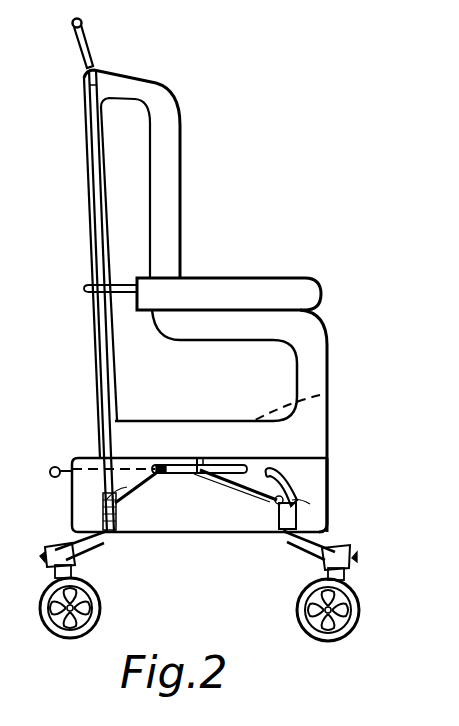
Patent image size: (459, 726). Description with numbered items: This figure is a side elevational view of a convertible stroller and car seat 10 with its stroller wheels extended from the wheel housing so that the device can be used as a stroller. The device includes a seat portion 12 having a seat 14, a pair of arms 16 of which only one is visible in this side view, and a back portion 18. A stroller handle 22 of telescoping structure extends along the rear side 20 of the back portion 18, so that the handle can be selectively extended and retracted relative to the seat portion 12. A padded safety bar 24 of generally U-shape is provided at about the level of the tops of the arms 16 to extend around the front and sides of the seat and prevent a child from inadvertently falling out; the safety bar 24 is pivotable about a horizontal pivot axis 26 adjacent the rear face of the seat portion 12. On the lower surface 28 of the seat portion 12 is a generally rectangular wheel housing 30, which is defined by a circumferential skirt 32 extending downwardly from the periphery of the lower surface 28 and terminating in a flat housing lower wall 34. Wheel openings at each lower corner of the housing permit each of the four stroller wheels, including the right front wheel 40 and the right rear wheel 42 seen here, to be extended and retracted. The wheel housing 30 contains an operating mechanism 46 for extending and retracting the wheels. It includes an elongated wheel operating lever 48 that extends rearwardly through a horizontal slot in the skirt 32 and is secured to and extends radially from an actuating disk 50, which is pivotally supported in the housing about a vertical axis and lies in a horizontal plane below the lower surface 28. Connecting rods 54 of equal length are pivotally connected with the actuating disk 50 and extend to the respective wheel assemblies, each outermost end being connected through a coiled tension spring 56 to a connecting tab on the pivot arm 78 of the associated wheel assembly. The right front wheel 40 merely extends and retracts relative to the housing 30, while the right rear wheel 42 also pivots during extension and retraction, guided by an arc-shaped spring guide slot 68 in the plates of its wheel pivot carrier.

The convertible stroller and car seat 10 is at (275, 144).
The seat portion 12 is at (350, 372).
The seat 14 is at (320, 398).
The arms 16 is at (312, 332).
The back portion 18 is at (128, 115).
The rear side 20 is at (89, 152).
The stroller handle 22 is at (94, 44).
The padded safety bar 24 is at (264, 285).
The horizontal pivot axis 26 is at (84, 288).
The lower surface 28 is at (246, 457).
The wheel housing 30 is at (329, 479).
The circumferential skirt 32 is at (72, 498).
The housing lower wall 34 is at (193, 534).
The right front wheel 40 is at (359, 608).
The right rear wheel 42 is at (102, 610).
The operating mechanism 46 is at (173, 451).
The wheel operating lever 48 is at (56, 467).
The actuating disk 50 is at (215, 458).
The connecting rods 54 is at (130, 487).
The coiled tension spring 56 is at (298, 514).
The spring guide slot 68 is at (286, 483).
The pivot arm 78 is at (275, 501).